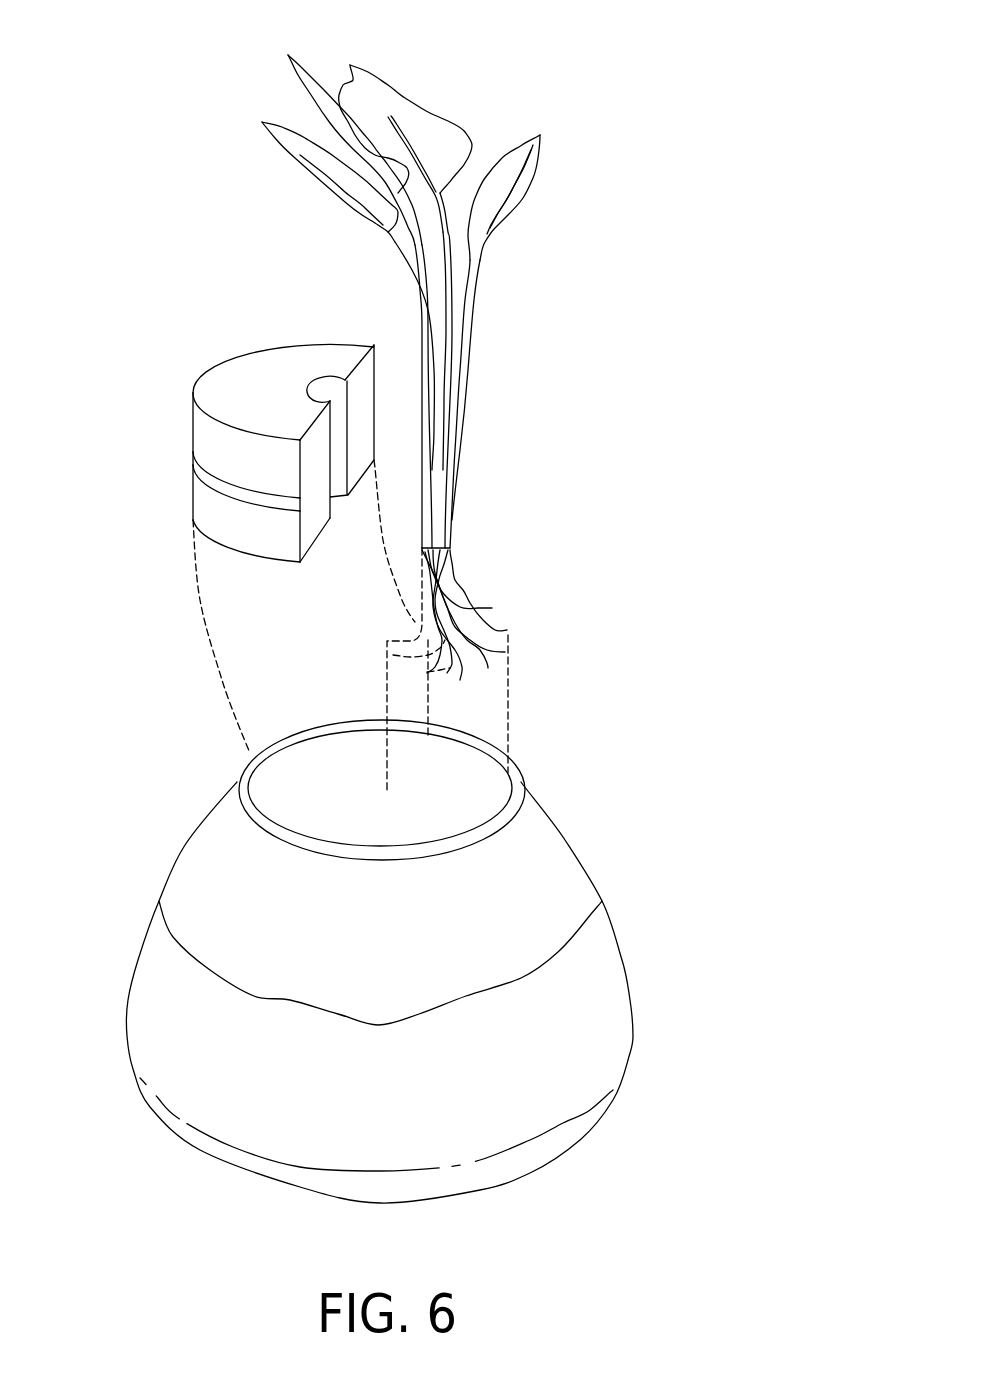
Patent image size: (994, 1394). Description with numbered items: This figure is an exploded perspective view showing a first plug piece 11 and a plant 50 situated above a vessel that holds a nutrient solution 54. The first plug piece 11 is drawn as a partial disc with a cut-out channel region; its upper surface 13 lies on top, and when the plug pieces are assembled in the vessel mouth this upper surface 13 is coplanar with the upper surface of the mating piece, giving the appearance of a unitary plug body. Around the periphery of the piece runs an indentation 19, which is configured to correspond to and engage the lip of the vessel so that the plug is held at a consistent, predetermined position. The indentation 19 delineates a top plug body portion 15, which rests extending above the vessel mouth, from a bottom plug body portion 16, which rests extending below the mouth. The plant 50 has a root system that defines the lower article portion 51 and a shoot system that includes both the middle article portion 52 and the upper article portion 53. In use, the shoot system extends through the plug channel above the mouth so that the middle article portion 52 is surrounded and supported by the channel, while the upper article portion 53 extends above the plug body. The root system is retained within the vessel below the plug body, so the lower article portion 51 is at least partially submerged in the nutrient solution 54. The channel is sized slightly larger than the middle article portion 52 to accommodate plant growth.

The first plug piece 11 is at (268, 375).
The upper surface 13 is at (328, 360).
The top plug body portion 15 is at (203, 435).
The indentation 19 is at (212, 478).
The bottom plug body portion 16 is at (215, 515).
The plant 50 is at (684, 114).
The lower article portion 51 is at (560, 528).
The middle article portion 52 is at (560, 373).
The upper article portion 53 is at (560, 80).
The nutrient solution 54 is at (585, 1018).